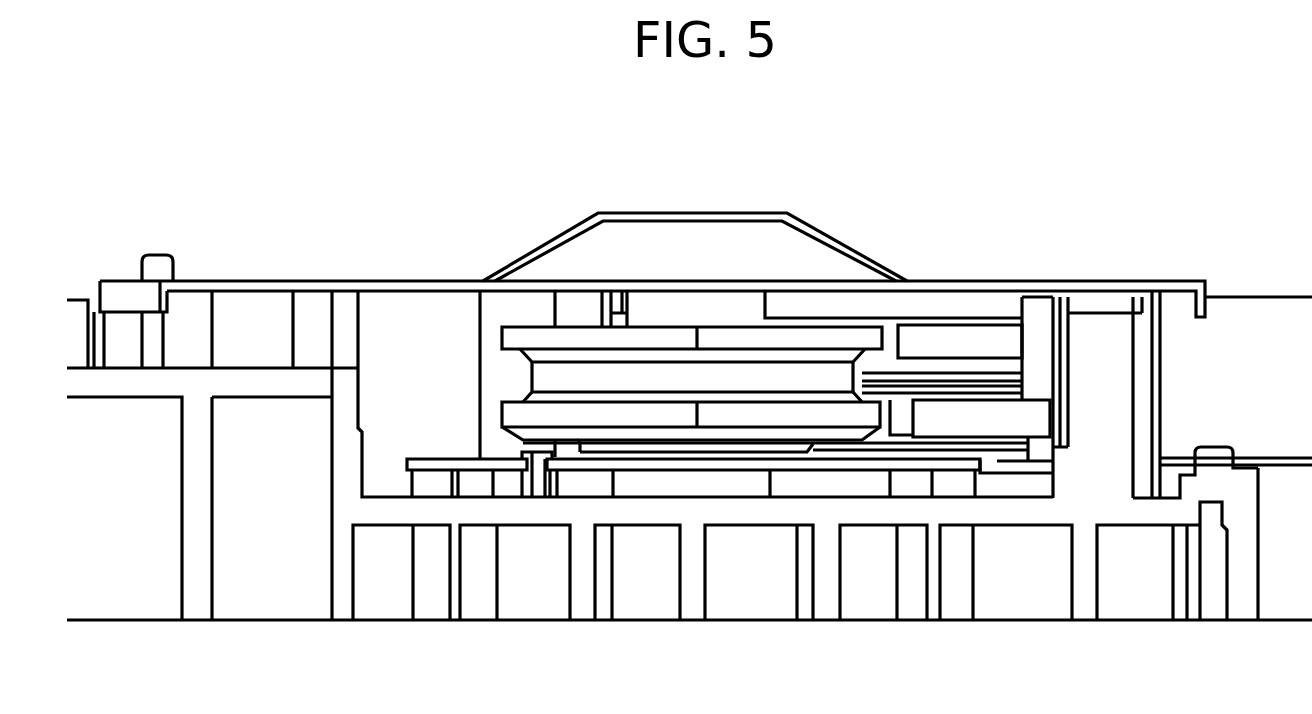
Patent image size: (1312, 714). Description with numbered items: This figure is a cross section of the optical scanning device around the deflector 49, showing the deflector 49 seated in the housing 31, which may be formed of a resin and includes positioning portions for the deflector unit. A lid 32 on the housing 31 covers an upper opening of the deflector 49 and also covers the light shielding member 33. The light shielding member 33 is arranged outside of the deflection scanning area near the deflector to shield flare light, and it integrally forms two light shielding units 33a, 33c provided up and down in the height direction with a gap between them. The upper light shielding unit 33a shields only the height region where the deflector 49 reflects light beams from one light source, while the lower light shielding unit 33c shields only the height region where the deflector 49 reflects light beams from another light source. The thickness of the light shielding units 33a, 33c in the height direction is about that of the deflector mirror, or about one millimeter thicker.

The housing 31 is at (345, 510).
The lid 32 is at (734, 228).
The light shielding member 33 is at (1038, 307).
The light shielding unit 33a is at (978, 335).
The light shielding unit 33c is at (1003, 425).
The deflector 49 is at (727, 380).